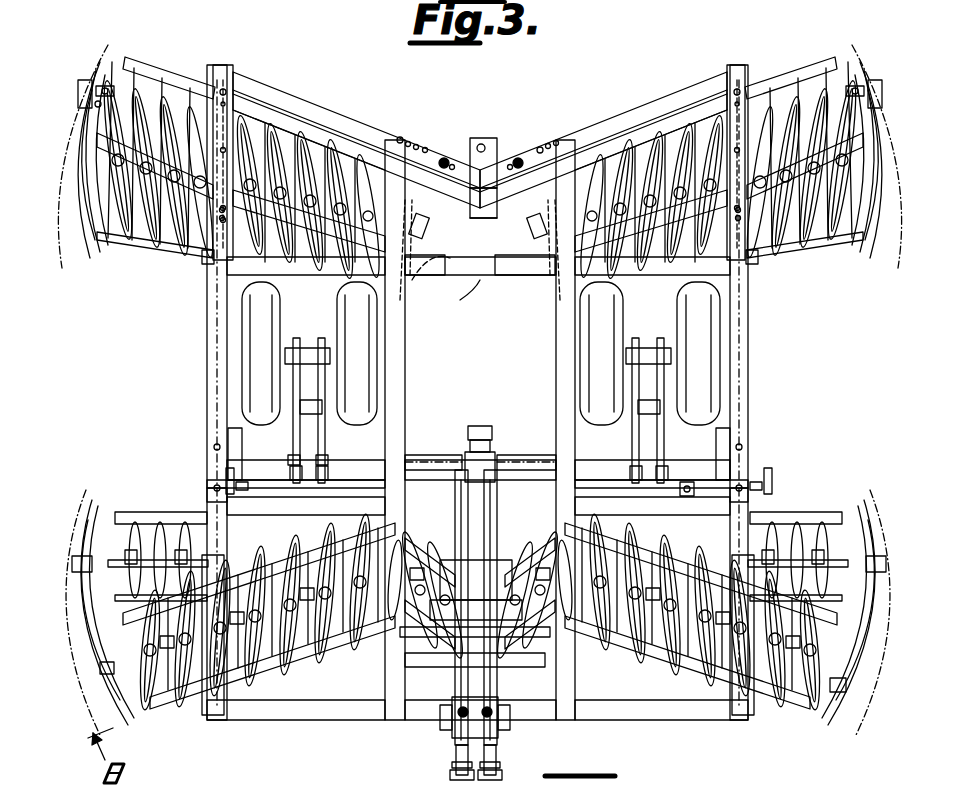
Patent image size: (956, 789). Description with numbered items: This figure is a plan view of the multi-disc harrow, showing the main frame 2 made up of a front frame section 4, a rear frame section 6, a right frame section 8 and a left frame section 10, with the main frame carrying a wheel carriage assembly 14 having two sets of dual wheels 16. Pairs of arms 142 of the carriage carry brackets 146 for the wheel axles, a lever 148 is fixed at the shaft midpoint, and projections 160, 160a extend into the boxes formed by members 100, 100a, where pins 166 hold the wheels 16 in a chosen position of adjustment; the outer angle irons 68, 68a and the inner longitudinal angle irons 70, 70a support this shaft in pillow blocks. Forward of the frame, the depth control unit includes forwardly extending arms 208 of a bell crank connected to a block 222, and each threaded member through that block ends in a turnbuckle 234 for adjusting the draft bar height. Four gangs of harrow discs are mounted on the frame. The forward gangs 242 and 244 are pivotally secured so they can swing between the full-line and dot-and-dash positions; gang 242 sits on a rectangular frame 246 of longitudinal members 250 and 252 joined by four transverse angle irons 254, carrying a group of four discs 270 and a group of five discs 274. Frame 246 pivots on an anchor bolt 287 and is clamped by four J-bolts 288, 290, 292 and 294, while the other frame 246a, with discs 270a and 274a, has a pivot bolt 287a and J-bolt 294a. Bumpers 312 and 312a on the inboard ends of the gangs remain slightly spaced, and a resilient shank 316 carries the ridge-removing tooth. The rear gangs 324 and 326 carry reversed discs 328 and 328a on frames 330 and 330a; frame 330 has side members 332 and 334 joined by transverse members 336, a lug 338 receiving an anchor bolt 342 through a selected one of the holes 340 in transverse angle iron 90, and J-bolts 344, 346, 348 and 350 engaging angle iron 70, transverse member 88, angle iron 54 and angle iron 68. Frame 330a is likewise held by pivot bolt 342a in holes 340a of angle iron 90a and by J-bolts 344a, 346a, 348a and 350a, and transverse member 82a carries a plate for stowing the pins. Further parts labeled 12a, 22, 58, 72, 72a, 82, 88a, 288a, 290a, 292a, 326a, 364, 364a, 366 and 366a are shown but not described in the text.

The main frame 2 is at (760, 368).
The front frame section 4 is at (505, 490).
The rear frame section 6 is at (476, 290).
The right frame section 8 is at (340, 100).
The left frame section 10 is at (700, 82).
The hitch tongue 12a is at (508, 664).
The wheel carriage assembly 14 is at (440, 456).
The dual wheels 16 is at (255, 345).
The hitch cross member 22 is at (528, 642).
The angle iron 54 is at (442, 280).
The center bracket 58 is at (490, 145).
The outer angle iron 68 is at (210, 362).
The outer angle iron 68a is at (742, 384).
The inner longitudinal angle iron 70 is at (403, 345).
The inner longitudinal angle iron 70a is at (558, 342).
The rear cross beam 72 is at (345, 715).
The rear cross beam 72a is at (574, 716).
The bracket 82 is at (210, 492).
The transverse member 82a is at (696, 487).
The transverse member 88 is at (290, 268).
The front cross beam 88a is at (618, 274).
The transverse angle iron 90 is at (245, 70).
The angle iron 90a is at (672, 100).
The box member 100 is at (232, 432).
The box member 100a is at (728, 432).
The arms 142 is at (295, 428).
The brackets 146 is at (295, 345).
The lever 148 is at (480, 428).
The projection 160 is at (212, 448).
The projection 160a is at (744, 448).
The pin 166 is at (225, 475).
The forwardly extending arms 208 is at (450, 715).
The block 222 is at (490, 750).
The turnbuckle 234 is at (455, 770).
The forward gang 242 is at (80, 512).
The forward gang 244 is at (868, 505).
The gang frame 246 is at (118, 508).
The gang frame 246a is at (840, 508).
The longitudinal member 250 is at (274, 524).
The longitudinal member 252 is at (262, 660).
The transverse angle irons 254 is at (160, 708).
The group of four discs 270 is at (228, 700).
The group of harrow discs 270a is at (760, 712).
The group of five discs 274 is at (350, 655).
The group of harrow discs 274a is at (612, 660).
The pivot or anchor bolt 287 is at (372, 486).
The pivot bolt 287a is at (590, 486).
The J-bolt 288 is at (370, 466).
The middle cross beam 288a is at (588, 470).
The J-bolt 290 is at (405, 660).
The inner rear discs 290a is at (558, 660).
The J-bolt 292 is at (218, 712).
The rear gang support 292a is at (728, 712).
The J-bolt 294 is at (135, 514).
The J-bolt 294a is at (785, 516).
The bumper 312 is at (444, 456).
The bumper 312a is at (510, 456).
The resilient shank 316 is at (475, 440).
The rear gang 324 is at (100, 55).
The rear gang 326 is at (865, 62).
The outer front disc blade 326a is at (875, 255).
The gang of harrow discs 328 is at (140, 55).
The gang of harrow discs 328a is at (810, 62).
The gang frame 330 is at (170, 62).
The gang frame 330a is at (860, 60).
The angle iron side member 332 is at (300, 135).
The angle iron side member 334 is at (338, 272).
The transverse members 336 is at (102, 72).
The lug 338 is at (426, 146).
The spaced holes 340 is at (402, 136).
The holes 340a is at (545, 140).
The anchor bolt 342 is at (444, 158).
The pivot bolt 342a is at (518, 157).
The J-bolt 344 is at (378, 128).
The J-bolt 344a is at (582, 128).
The J-bolt 346 is at (405, 290).
The J-bolt 346a is at (555, 290).
The J-bolt 348 is at (218, 222).
The J-bolt 348a is at (742, 225).
The J-bolt 350 is at (221, 72).
The J-bolt 350a is at (736, 85).
The bracket 364 is at (205, 262).
The bracket 364a is at (755, 265).
The post 366 is at (240, 82).
The post 366a is at (745, 90).